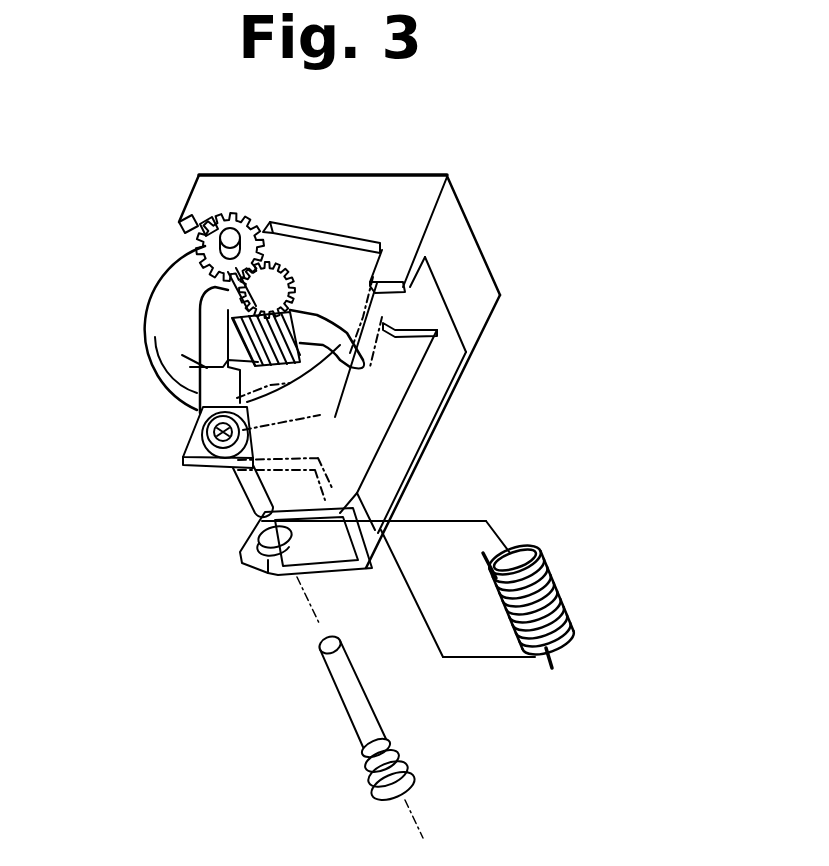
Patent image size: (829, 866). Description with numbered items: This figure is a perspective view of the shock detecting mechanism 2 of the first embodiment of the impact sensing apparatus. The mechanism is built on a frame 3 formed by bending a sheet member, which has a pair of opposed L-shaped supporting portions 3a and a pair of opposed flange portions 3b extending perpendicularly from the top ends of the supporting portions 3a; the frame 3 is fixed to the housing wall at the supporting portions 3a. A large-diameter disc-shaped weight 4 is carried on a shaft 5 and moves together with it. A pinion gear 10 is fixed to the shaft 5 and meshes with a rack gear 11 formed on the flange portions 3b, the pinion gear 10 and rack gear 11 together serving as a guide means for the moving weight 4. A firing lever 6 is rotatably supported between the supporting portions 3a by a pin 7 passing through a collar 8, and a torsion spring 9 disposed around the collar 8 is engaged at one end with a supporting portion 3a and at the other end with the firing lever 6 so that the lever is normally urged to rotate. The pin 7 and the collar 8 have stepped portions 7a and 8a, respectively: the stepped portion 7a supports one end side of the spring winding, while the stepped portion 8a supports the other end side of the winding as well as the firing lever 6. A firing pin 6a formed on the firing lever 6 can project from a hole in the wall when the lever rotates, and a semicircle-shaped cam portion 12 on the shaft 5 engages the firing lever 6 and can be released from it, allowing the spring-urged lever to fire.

The shock detecting mechanism 2 is at (509, 318).
The frame 3 is at (424, 171).
The supporting portions 3a is at (418, 434).
The flange portions 3b is at (293, 183).
The weight 4 is at (163, 312).
The shaft 5 is at (298, 298).
The firing lever 6 is at (207, 368).
The firing pin 6a is at (225, 358).
The pin 7 is at (352, 700).
The stepped portion 7a is at (368, 765).
The collar 8 is at (240, 495).
The stepped portion 8a is at (237, 483).
The torsion spring 9 is at (560, 588).
The pinion gear 10 is at (207, 257).
The rack gear 11 is at (200, 215).
The cam portion 12 is at (278, 258).